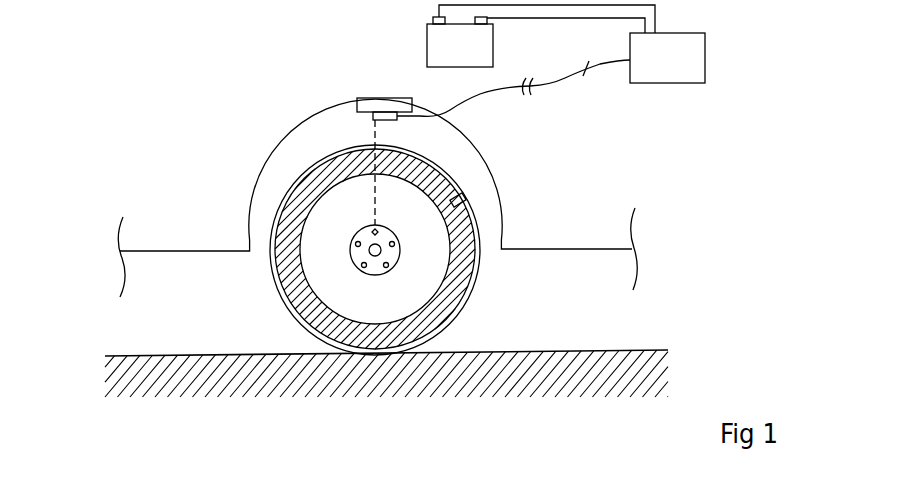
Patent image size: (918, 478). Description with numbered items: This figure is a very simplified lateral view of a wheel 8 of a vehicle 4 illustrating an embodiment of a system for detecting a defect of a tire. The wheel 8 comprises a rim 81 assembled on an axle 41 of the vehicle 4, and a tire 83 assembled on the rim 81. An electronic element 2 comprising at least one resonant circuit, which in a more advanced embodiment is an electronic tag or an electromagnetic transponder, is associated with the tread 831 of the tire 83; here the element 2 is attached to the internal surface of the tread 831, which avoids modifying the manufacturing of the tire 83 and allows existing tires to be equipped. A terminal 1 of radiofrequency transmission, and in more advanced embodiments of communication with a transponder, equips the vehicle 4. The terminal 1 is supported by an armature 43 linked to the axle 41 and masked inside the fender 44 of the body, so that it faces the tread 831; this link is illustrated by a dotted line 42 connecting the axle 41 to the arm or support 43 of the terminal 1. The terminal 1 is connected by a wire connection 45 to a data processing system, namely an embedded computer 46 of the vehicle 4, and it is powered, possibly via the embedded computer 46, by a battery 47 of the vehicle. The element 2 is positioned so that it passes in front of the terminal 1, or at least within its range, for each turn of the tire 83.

The terminal 1 is at (374, 113).
The electronic element 2 is at (482, 190).
The vehicle 4 is at (607, 228).
The wheel 8 is at (250, 311).
The axle 41 is at (379, 248).
The dotted line 42 is at (374, 194).
The armature 43 is at (396, 101).
The fender 44 is at (282, 167).
The wire connection 45 is at (553, 85).
The embedded computer 46 is at (692, 62).
The battery 47 is at (425, 61).
The rim 81 is at (404, 300).
The tire 83 is at (466, 290).
The tread 831 is at (462, 192).